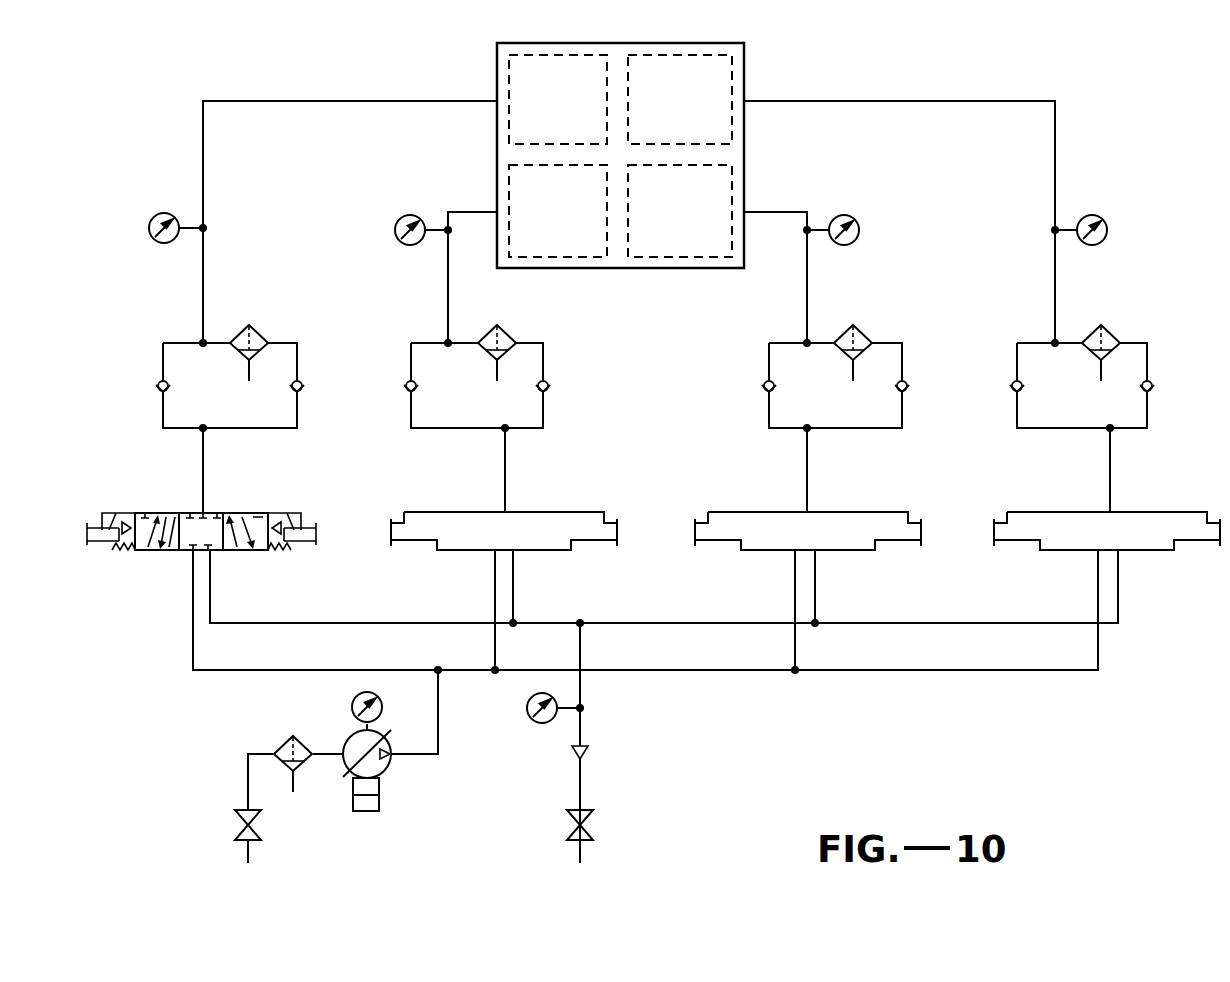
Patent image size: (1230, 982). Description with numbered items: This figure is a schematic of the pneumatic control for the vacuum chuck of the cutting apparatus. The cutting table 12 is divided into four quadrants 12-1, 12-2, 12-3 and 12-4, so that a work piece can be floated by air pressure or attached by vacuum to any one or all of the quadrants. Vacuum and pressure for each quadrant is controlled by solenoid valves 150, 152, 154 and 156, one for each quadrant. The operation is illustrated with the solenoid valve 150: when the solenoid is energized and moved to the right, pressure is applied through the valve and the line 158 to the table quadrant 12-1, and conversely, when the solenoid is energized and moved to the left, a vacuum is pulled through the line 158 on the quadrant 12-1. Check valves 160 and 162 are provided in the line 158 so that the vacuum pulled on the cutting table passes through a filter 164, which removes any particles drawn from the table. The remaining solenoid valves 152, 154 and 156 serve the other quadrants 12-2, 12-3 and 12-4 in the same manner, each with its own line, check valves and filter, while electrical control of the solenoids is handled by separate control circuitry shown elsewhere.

The cutting table 12 is at (662, 151).
The table quadrant 12-1 is at (558, 99).
The table quadrant 12-2 is at (558, 211).
The table quadrant 12-3 is at (680, 211).
The table quadrant 12-4 is at (680, 99).
The solenoid valve 150 is at (237, 512).
The solenoid valve 152 is at (541, 512).
The solenoid valve 154 is at (843, 512).
The solenoid valve 156 is at (1141, 512).
The line 158 is at (203, 273).
The check valve 160 is at (158, 387).
The check valve 162 is at (302, 389).
The filter 164 is at (266, 335).